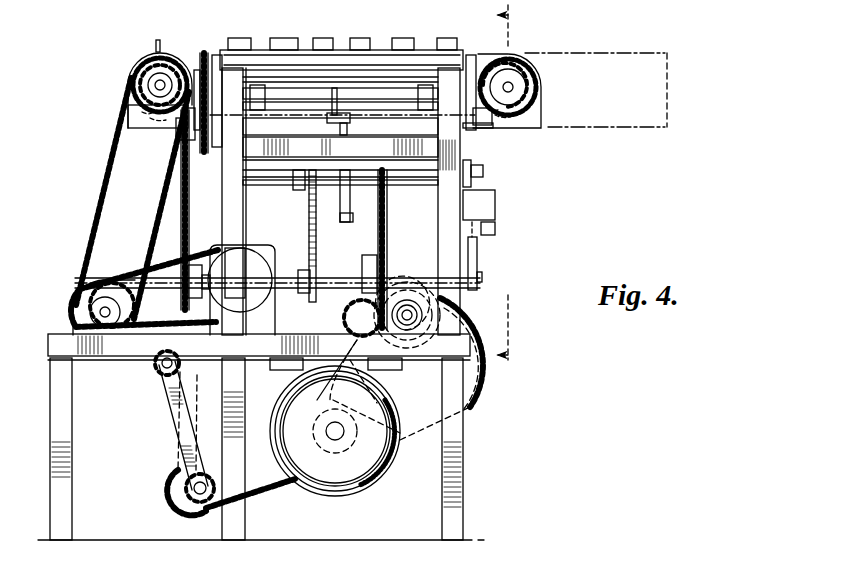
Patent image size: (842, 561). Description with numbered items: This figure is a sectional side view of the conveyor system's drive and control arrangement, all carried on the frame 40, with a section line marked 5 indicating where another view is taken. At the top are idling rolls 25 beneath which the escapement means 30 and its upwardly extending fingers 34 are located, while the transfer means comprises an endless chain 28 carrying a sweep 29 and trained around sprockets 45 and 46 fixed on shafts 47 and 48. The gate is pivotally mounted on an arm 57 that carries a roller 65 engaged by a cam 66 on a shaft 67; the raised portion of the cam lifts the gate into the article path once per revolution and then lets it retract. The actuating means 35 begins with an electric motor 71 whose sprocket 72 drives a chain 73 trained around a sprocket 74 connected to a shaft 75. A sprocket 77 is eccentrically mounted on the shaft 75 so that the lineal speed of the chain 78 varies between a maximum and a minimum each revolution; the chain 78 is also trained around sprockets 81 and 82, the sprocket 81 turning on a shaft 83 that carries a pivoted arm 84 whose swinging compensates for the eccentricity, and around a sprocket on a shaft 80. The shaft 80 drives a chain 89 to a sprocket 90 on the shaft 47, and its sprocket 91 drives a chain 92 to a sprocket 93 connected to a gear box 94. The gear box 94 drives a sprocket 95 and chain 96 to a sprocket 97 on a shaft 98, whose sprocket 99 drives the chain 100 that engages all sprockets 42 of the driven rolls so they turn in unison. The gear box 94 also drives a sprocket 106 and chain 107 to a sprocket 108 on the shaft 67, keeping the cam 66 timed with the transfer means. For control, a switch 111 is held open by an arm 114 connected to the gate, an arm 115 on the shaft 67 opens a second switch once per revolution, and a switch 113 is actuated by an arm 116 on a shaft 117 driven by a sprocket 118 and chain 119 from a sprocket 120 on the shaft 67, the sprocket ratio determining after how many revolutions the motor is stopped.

The idling rolls 25 is at (258, 55).
The endless chain 28 is at (472, 55).
The sweep 29 is at (156, 46).
The escapement means 30 is at (336, 33).
The fingers 34 is at (290, 40).
The actuating means 35 is at (480, 408).
The frame 40 is at (466, 487).
The sprockets 42 is at (210, 53).
The sprocket 45 is at (128, 72).
The sprocket 46 is at (530, 70).
The shaft 47 is at (147, 100).
The shaft 48 is at (514, 87).
The arm 57 is at (330, 124).
The roller 65 is at (350, 123).
The cam 66 is at (353, 218).
The shaft 67 is at (282, 180).
The electric motor 71 is at (365, 488).
The sprocket 72 is at (385, 473).
The chain 73 is at (388, 392).
The sprocket 74 is at (400, 345).
The shaft 75 is at (412, 314).
The eccentric sprocket 77 is at (478, 370).
The chain 78 is at (276, 496).
The shaft 80 is at (100, 313).
The sprocket 81 is at (155, 370).
The sprocket 82 is at (178, 497).
The shaft 83 is at (170, 380).
The pivoted arm 84 is at (172, 408).
The chain 89 is at (105, 205).
The sprocket 90 is at (133, 80).
The sprocket 91 is at (78, 292).
The chain 92 is at (128, 268).
The sprocket 93 is at (255, 334).
The gear box 94 is at (255, 252).
The sprocket 95 is at (188, 296).
The chain 96 is at (190, 226).
The sprocket 97 is at (176, 135).
The shaft 98 is at (182, 130).
The sprocket 99 is at (212, 147).
The chain 100 is at (198, 72).
The sprocket 106 is at (303, 294).
The chain 107 is at (318, 240).
The sprocket 108 is at (303, 190).
The switch 111 is at (493, 128).
The switch 113 is at (496, 228).
The arm 114 is at (480, 126).
The arm 115 is at (476, 182).
The arm 116 is at (478, 255).
The shaft 117 is at (418, 283).
The sprocket 118 is at (377, 250).
The chain 119 is at (388, 216).
The sprocket 120 is at (388, 192).
The section line 5 is at (515, 186).